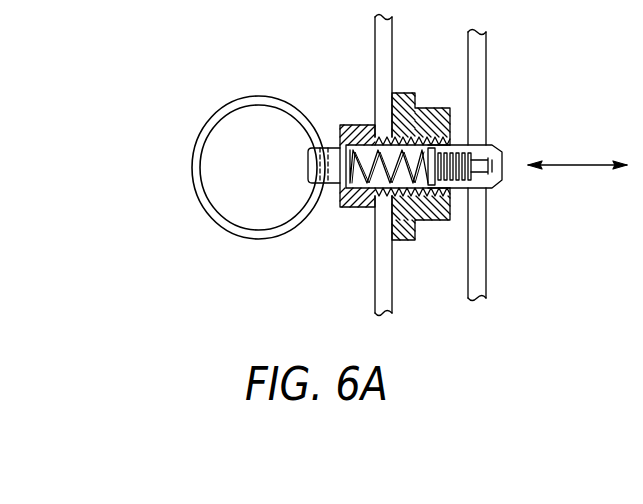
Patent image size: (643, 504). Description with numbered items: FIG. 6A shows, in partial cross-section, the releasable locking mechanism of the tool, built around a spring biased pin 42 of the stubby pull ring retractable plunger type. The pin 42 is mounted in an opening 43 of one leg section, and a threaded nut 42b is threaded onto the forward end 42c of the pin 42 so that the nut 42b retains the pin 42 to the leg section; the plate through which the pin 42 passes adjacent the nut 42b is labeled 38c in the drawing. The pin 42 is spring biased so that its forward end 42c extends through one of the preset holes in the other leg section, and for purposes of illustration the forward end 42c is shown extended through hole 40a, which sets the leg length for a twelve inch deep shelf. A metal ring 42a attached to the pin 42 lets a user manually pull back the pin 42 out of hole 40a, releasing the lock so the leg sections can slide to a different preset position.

The plate 38c is at (372, 56).
The hole 40a is at (487, 130).
The spring biased pin 42 is at (357, 125).
The metal ring 42a is at (232, 100).
The threaded nut 42b is at (437, 108).
The forward end 42c is at (498, 187).
The opening 43 is at (383, 196).